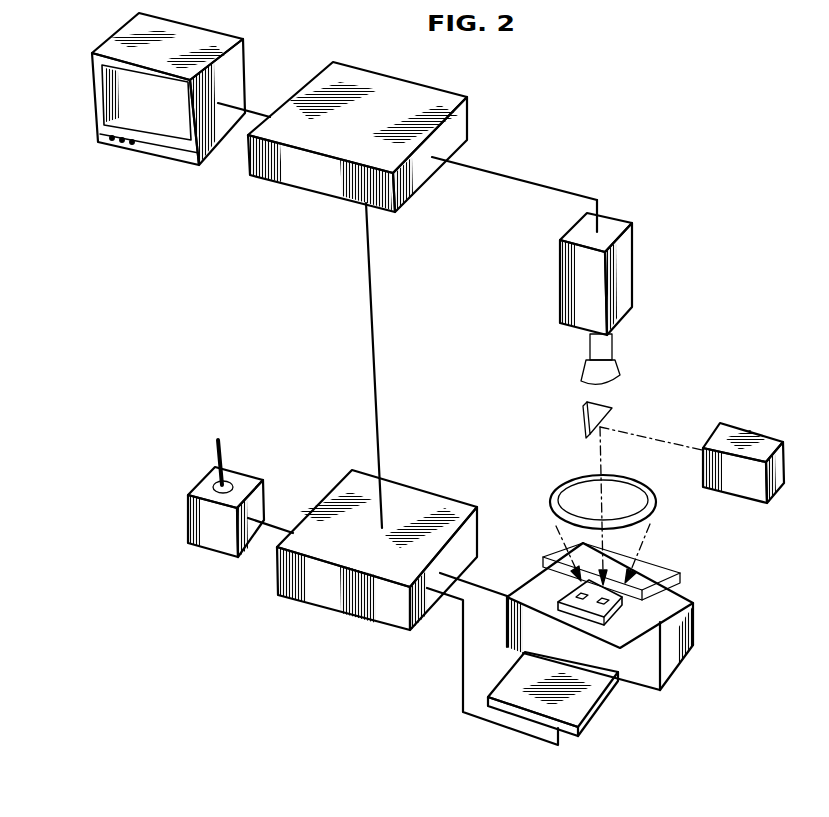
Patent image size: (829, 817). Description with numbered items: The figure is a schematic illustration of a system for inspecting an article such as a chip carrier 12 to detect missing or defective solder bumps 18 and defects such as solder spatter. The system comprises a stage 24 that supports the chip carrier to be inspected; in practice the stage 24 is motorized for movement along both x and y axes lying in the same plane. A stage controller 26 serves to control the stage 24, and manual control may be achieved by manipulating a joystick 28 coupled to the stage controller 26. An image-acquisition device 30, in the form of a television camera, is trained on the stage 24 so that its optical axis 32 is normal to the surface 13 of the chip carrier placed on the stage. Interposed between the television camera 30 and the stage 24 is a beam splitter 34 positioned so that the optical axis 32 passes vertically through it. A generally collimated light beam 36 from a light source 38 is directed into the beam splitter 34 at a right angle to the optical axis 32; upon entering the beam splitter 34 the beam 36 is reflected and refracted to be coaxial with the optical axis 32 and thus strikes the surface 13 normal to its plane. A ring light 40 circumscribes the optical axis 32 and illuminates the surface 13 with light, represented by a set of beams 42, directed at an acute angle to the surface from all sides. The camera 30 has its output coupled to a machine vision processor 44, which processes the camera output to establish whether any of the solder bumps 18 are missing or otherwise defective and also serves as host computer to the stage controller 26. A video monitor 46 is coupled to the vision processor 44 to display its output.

The stage 12 is at (690, 610).
The surface 13 is at (663, 587).
The solder bumps 18 is at (575, 582).
The stage 24 is at (637, 675).
The stage controller 26 is at (340, 590).
The joystick 28 is at (243, 480).
The image-acquisition device 30 is at (568, 263).
The optical axis 32 is at (600, 498).
The beam splitter 34 is at (585, 410).
The light beam 36 is at (657, 437).
The light source 38 is at (743, 435).
The ring light 40 is at (560, 490).
The beams 42 is at (557, 528).
The machine vision processor 44 is at (298, 175).
The video monitor 46 is at (118, 92).